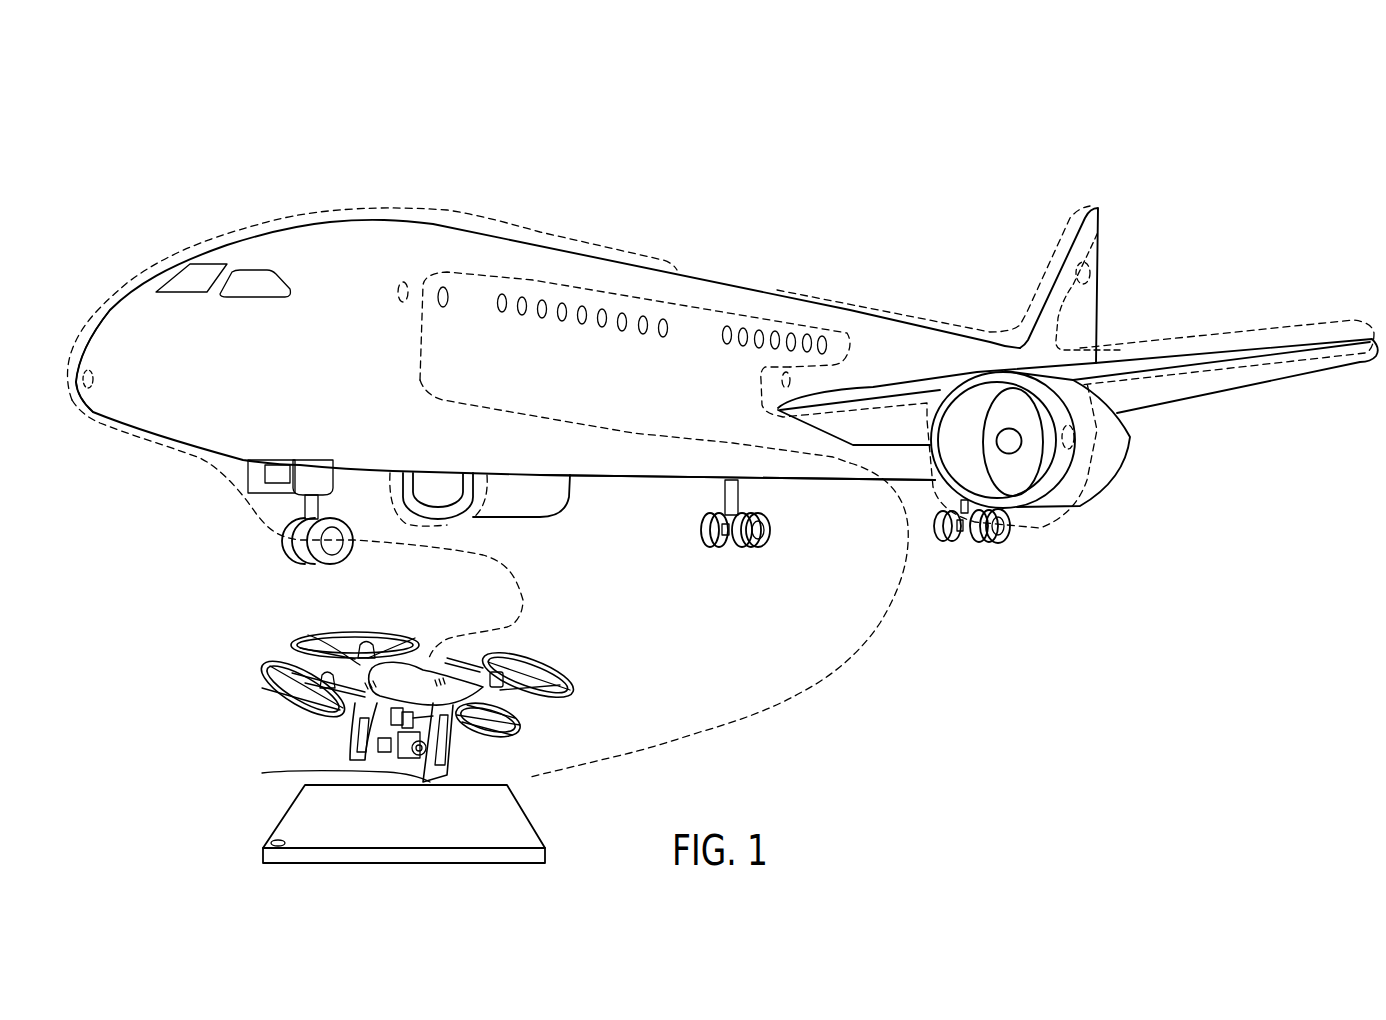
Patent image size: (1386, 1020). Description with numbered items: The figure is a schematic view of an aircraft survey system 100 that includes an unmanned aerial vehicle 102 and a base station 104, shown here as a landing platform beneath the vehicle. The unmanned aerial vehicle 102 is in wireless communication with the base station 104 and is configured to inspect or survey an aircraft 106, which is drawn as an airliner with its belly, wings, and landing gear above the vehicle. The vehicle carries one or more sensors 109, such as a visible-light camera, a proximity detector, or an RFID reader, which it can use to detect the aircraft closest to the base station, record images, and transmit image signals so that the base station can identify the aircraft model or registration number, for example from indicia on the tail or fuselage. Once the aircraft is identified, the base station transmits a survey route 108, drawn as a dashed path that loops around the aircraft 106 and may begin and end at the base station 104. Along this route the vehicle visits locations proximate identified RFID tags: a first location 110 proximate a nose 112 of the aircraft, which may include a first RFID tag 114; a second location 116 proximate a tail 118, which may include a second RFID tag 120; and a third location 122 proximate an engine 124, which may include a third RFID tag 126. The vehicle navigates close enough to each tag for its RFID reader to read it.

The aircraft survey system 100 is at (160, 145).
The unmanned aerial vehicle 102 is at (552, 700).
The base station 104 is at (540, 823).
The aircraft 106 is at (637, 477).
The survey route 108 is at (537, 232).
The sensors 109 is at (279, 840).
The first location 110 is at (74, 326).
The nose 112 is at (87, 407).
The first RFID tag 114 is at (97, 374).
The second location 116 is at (1108, 167).
The tail 118 is at (1097, 292).
The second RFID tag 120 is at (1101, 260).
The third location 122 is at (1112, 429).
The engine 124 is at (1011, 500).
The third RFID tag 126 is at (1073, 440).